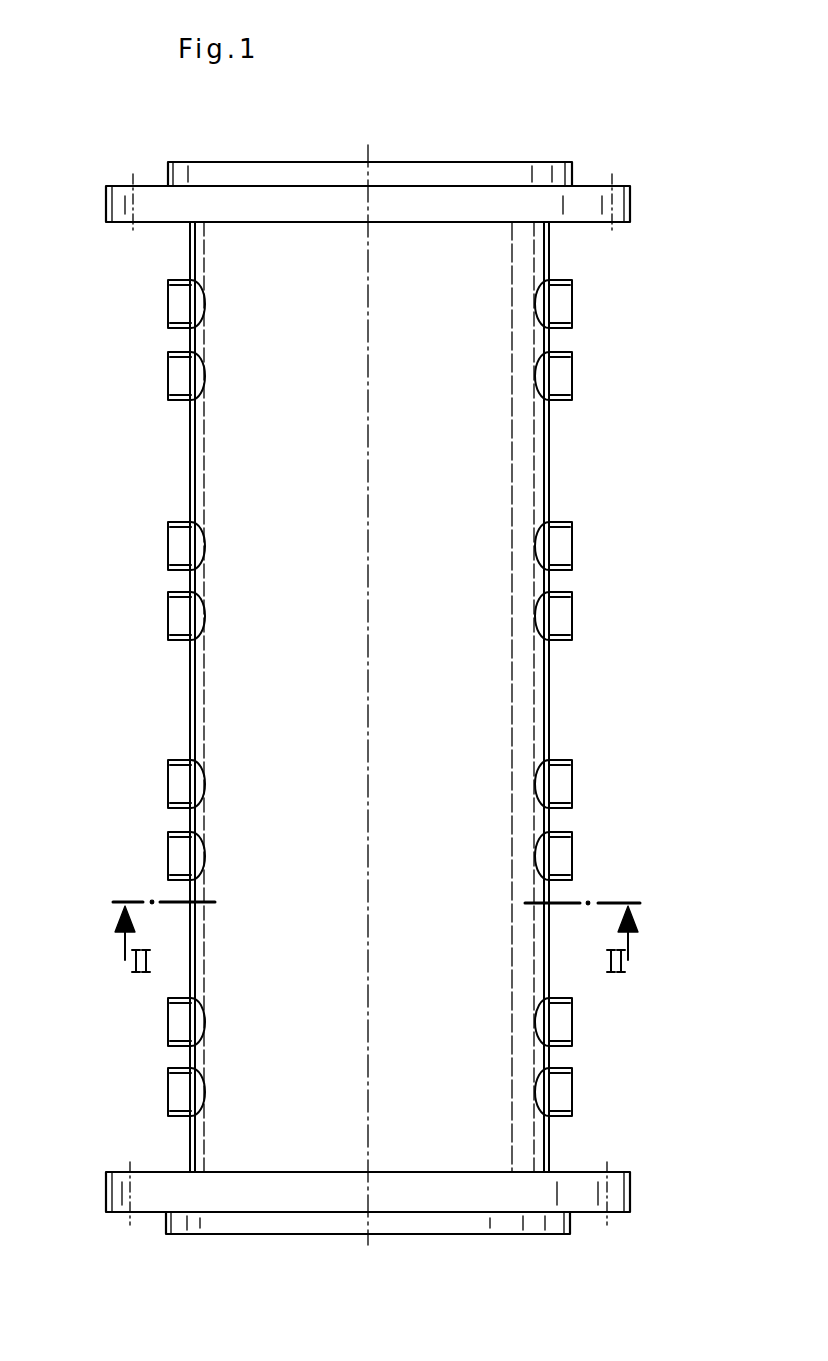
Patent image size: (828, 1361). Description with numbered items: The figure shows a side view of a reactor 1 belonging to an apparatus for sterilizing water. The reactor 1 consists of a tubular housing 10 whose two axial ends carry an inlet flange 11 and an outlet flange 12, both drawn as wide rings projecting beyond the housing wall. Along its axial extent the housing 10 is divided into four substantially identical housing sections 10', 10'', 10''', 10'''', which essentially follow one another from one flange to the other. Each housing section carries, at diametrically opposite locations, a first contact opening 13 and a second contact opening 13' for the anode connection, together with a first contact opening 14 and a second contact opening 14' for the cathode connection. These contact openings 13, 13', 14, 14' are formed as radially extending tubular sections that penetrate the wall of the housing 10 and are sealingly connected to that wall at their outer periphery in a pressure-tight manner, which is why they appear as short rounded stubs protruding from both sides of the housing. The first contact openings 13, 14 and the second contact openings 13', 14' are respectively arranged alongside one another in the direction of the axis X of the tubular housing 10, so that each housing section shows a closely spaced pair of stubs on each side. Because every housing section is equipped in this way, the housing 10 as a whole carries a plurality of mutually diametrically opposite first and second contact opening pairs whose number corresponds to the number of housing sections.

The reactor 1 is at (333, 697).
The tubular housing 10 is at (573, 697).
The housing section 10' is at (593, 1057).
The housing section 10'' is at (620, 804).
The housing section 10''' is at (613, 581).
The housing section 10'''' is at (616, 340).
The inlet flange 11 is at (533, 1226).
The outlet flange 12 is at (544, 170).
The first contact opening 13 is at (151, 780).
The second contact opening 13' is at (592, 768).
The first contact opening 14 is at (151, 856).
The second contact opening 14' is at (594, 854).
The axis X is at (368, 1063).